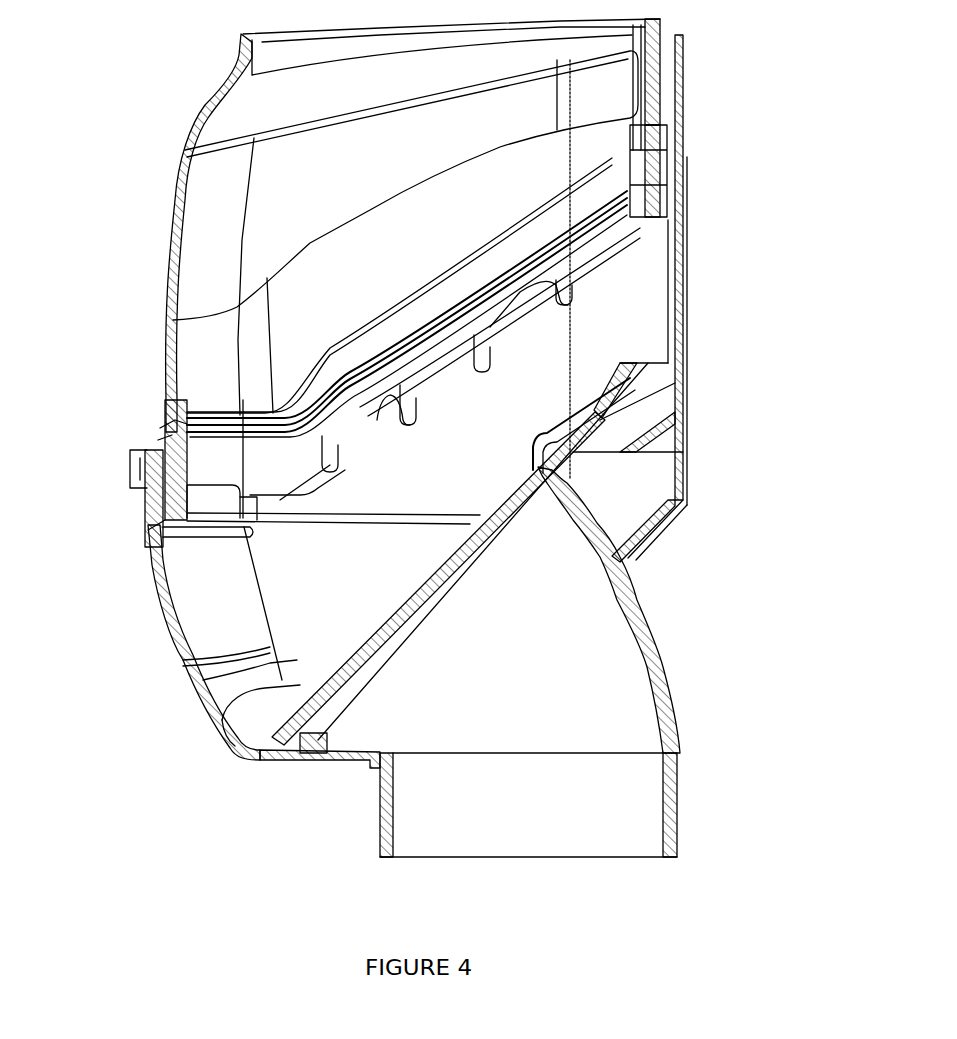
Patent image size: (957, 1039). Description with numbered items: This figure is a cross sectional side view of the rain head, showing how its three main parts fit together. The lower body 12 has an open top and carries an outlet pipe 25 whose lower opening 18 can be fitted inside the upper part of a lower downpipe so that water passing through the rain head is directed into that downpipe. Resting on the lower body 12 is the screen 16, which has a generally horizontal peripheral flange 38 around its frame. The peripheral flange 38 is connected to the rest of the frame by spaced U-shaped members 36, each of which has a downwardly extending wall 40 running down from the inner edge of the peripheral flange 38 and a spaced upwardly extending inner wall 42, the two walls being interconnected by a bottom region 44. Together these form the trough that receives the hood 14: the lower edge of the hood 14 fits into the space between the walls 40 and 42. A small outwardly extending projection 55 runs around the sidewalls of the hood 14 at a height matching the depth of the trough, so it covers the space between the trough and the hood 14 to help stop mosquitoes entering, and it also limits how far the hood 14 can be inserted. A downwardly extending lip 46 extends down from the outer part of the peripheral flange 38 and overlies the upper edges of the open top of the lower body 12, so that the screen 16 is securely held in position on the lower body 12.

The lower body 12 is at (292, 635).
The hood 14 is at (200, 225).
The screen 16 is at (600, 237).
The lower opening 18 is at (497, 827).
The outlet pipe 25 is at (663, 675).
The U-shaped members 36 is at (492, 342).
The peripheral flange 38 is at (150, 447).
The downwardly extending wall 40 is at (160, 490).
The upwardly extending inner wall 42 is at (163, 433).
The bottom region 44 is at (150, 533).
The downwardly extending lip 46 is at (130, 477).
The outwardly extending projection 55 is at (160, 443).